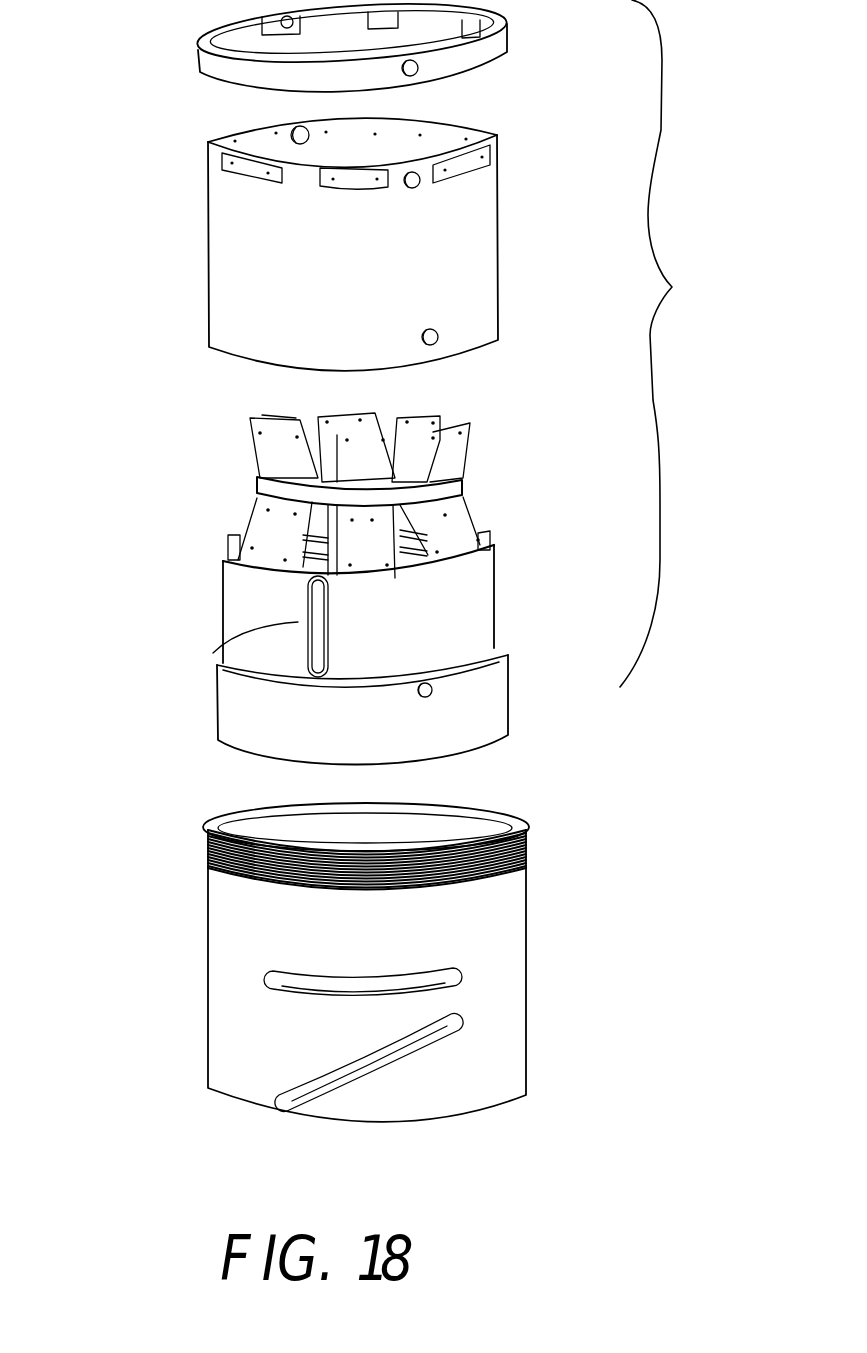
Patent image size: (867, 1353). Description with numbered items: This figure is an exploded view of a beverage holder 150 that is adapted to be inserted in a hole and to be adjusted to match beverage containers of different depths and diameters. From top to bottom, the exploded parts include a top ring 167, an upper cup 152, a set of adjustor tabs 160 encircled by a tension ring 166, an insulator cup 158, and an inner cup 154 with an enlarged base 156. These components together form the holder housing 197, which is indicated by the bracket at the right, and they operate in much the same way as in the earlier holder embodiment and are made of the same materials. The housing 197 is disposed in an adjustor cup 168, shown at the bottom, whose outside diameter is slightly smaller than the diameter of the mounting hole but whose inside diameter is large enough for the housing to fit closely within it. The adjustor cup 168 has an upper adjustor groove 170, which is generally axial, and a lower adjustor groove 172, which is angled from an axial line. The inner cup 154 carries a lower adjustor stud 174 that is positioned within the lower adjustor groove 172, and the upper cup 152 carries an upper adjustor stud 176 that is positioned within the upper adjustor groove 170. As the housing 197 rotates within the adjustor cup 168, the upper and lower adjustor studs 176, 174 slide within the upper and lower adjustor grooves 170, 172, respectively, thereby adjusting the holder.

The beverage holder 150 is at (128, 96).
The upper cup 152 is at (505, 240).
The inner cup 154 is at (495, 610).
The enlarged base 156 is at (226, 704).
The insulator cup 158 is at (228, 541).
The adjustor tabs 160 is at (446, 458).
The tension ring 166 is at (458, 484).
The top ring 167 is at (516, 32).
The adjustor cup 168 is at (470, 982).
The upper adjustor groove 170 is at (267, 987).
The lower adjustor groove 172 is at (445, 1038).
The lower adjustor stud 174 is at (433, 696).
The upper adjustor stud 176 is at (440, 337).
The upper assembly 197 is at (691, 343).